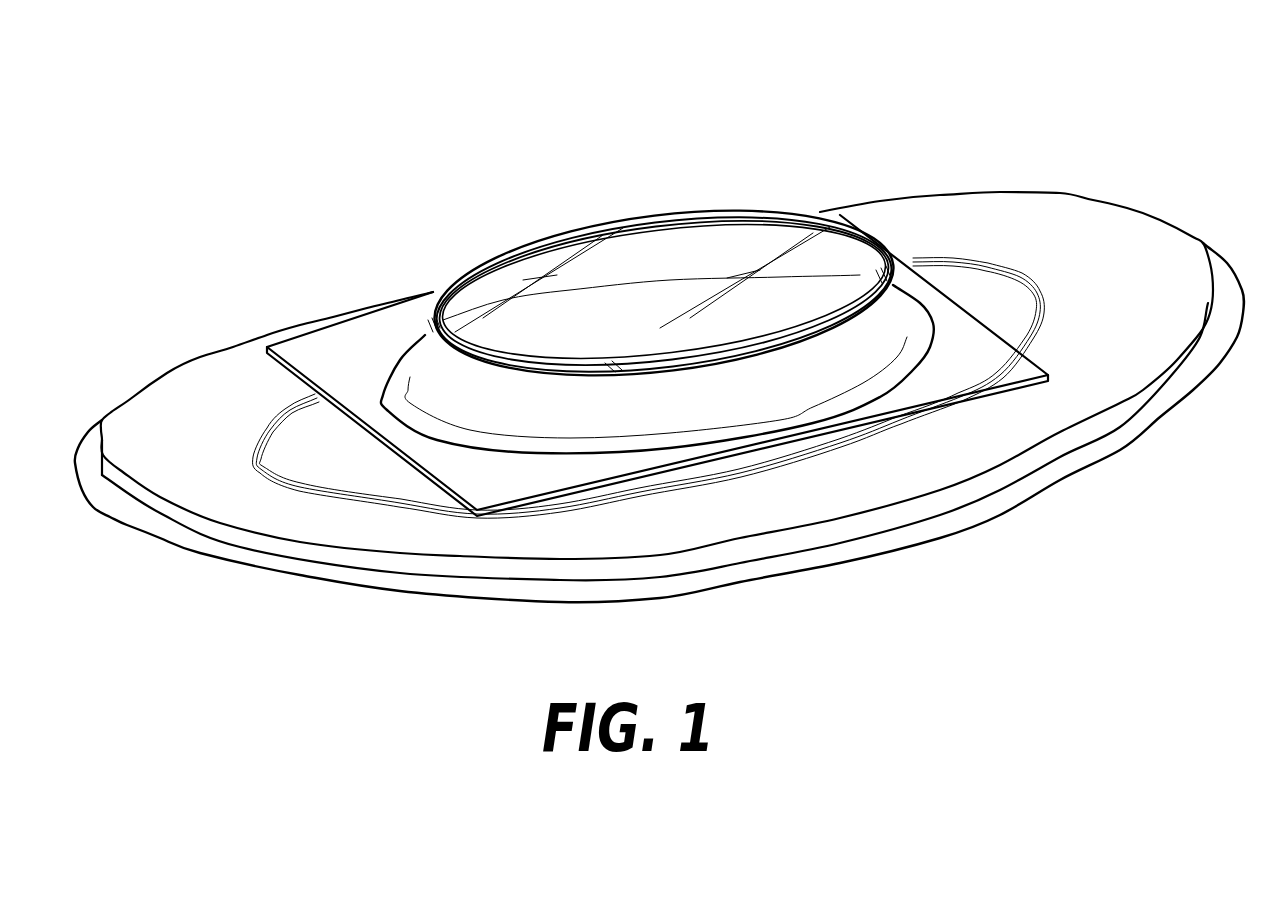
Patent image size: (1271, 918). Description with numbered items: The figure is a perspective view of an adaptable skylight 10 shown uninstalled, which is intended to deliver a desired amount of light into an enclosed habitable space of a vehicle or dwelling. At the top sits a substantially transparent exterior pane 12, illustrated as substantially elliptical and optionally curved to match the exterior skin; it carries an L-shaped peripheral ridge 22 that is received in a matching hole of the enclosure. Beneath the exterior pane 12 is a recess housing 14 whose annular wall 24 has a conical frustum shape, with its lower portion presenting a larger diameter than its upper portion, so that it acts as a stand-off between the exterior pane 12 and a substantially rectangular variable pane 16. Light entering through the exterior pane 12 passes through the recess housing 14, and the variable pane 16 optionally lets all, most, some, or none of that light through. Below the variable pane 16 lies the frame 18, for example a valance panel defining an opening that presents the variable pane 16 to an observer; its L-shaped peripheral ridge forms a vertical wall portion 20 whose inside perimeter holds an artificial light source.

The adaptable skylight 10 is at (306, 139).
The exterior pane 12 is at (703, 287).
The recess housing 14 is at (910, 305).
The variable pane 16 is at (987, 350).
The frame 18 is at (1155, 243).
The vertical wall portion 20 is at (1030, 462).
The L-shaped peripheral ridge 22 is at (436, 292).
The annular wall 24 is at (430, 377).